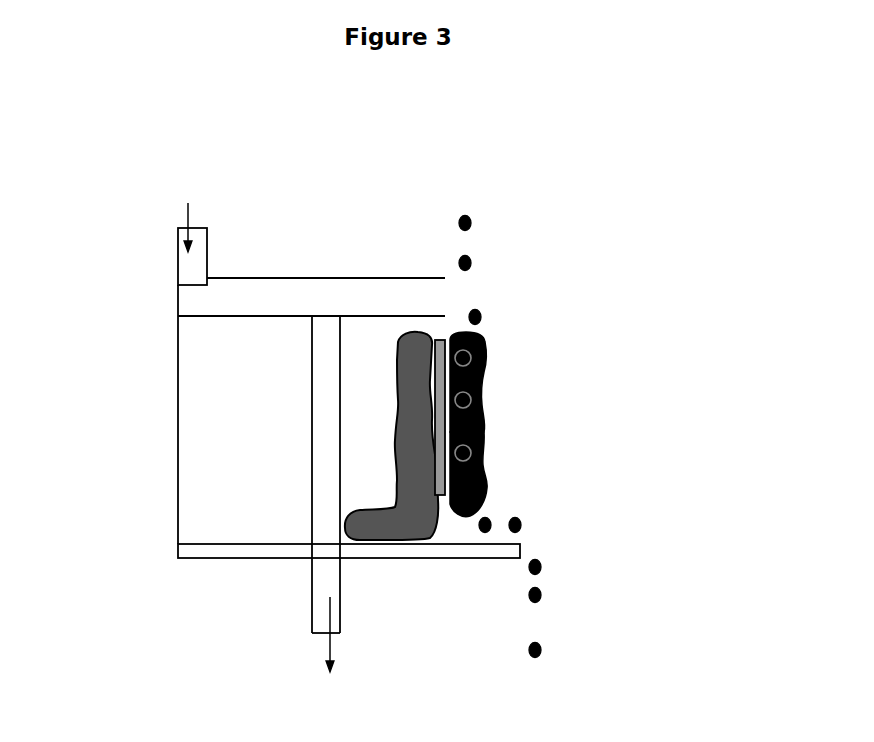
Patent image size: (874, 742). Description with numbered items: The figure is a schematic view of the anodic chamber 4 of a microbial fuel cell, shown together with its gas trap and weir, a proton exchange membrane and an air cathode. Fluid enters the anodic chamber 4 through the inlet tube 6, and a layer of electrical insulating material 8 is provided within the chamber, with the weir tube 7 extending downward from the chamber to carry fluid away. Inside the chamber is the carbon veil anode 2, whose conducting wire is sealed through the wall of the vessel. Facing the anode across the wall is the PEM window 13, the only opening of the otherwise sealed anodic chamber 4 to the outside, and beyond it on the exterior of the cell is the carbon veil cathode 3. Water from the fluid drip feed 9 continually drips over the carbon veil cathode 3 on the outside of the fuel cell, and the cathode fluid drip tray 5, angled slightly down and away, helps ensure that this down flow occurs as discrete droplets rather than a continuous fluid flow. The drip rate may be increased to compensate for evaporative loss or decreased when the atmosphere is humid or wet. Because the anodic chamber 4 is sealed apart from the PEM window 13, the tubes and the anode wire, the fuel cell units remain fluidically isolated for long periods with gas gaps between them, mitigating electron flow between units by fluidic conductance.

The anodic chamber 4 is at (122, 213).
The inlet tube 6 is at (220, 251).
The layer of electrical insulating material 8 is at (403, 296).
The weir tube 7 is at (297, 616).
The cathode fluid drip tray 5 is at (468, 569).
The carbon veil anode 2 is at (393, 531).
The PEM window 13 is at (454, 430).
The carbon veil cathode 3 is at (485, 475).
The fluid drip feed 9 is at (552, 556).